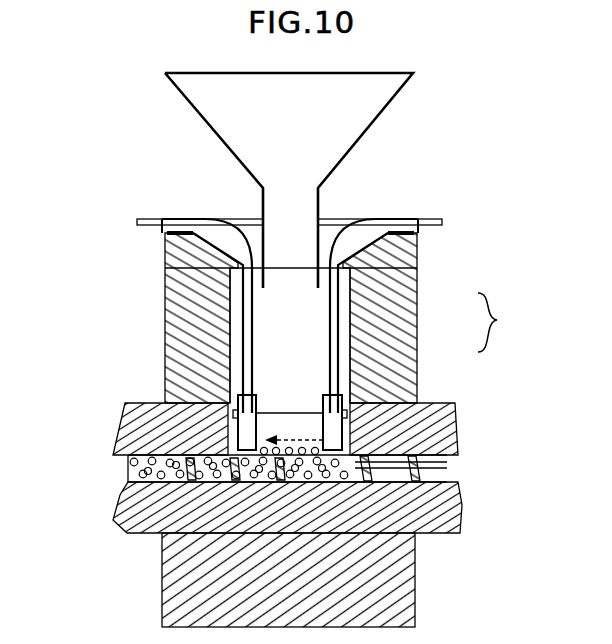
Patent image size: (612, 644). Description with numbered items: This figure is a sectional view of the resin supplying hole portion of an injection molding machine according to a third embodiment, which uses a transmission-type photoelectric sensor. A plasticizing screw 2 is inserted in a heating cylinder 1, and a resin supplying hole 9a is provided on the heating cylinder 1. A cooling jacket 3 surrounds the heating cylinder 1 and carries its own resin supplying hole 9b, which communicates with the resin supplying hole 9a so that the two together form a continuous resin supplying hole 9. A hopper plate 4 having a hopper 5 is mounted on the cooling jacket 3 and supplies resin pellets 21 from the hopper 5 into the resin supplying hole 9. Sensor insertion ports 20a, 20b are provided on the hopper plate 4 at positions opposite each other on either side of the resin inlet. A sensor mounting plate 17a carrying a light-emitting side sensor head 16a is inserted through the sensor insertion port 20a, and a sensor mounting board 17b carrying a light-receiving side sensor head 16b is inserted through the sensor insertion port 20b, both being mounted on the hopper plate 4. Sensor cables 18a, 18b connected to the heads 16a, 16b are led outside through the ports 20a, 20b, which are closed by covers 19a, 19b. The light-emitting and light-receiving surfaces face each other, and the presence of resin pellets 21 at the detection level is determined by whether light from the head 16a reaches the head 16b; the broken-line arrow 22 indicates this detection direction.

The heating cylinder 1 is at (122, 417).
The plasticizing screw 2 is at (440, 468).
The cooling jacket 3 is at (195, 335).
The hopper plate 4 is at (163, 250).
The hopper 5 is at (342, 76).
The resin supplying hole 9 is at (500, 322).
The resin supplying hole 9a is at (287, 423).
The resin supplying hole 9b is at (310, 340).
The light-emitting side sensor head 16a is at (350, 397).
The light-receiving side sensor head 16b is at (242, 393).
The sensor mounting plate 17a is at (343, 297).
The sensor mounting board 17b is at (240, 290).
The sensor cable 18a is at (442, 223).
The sensor cable 18b is at (150, 218).
The cover 19a is at (367, 218).
The cover 19b is at (222, 218).
The sensor insertion port 20a is at (418, 228).
The sensor insertion port 20b is at (160, 233).
The resin pellets 21 is at (127, 457).
The arrow 22 is at (322, 440).